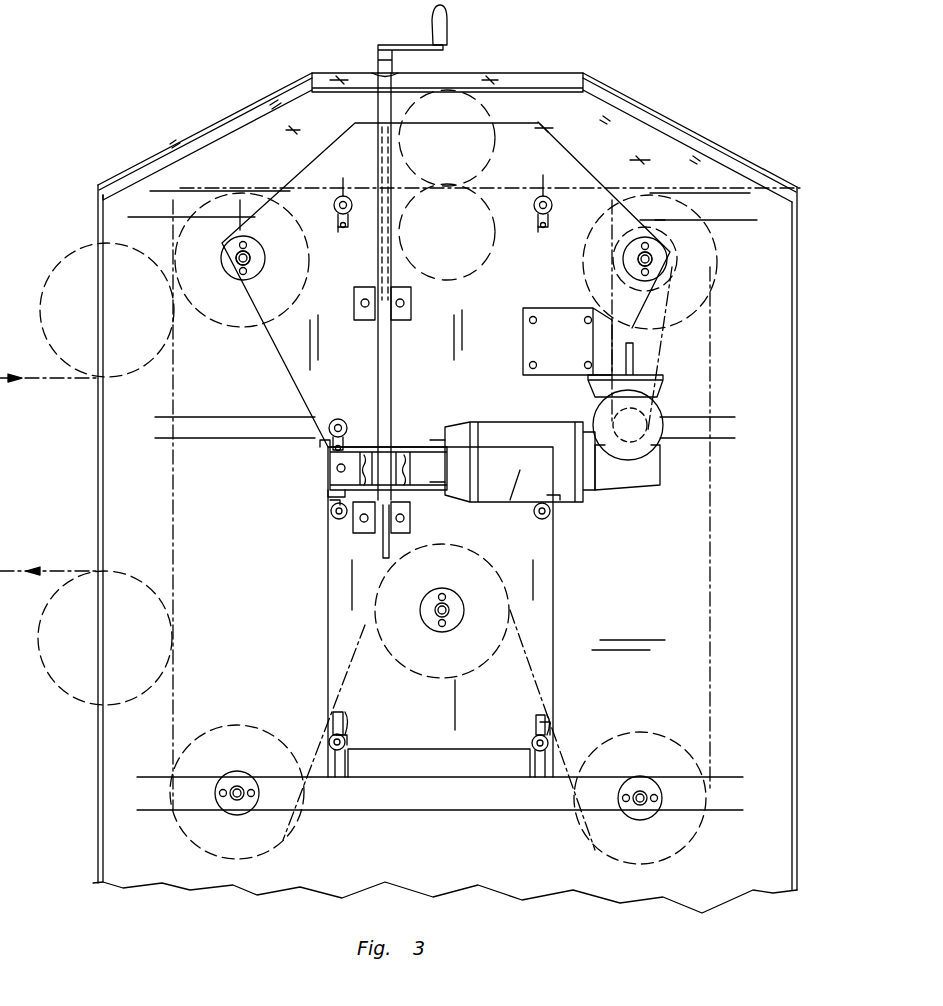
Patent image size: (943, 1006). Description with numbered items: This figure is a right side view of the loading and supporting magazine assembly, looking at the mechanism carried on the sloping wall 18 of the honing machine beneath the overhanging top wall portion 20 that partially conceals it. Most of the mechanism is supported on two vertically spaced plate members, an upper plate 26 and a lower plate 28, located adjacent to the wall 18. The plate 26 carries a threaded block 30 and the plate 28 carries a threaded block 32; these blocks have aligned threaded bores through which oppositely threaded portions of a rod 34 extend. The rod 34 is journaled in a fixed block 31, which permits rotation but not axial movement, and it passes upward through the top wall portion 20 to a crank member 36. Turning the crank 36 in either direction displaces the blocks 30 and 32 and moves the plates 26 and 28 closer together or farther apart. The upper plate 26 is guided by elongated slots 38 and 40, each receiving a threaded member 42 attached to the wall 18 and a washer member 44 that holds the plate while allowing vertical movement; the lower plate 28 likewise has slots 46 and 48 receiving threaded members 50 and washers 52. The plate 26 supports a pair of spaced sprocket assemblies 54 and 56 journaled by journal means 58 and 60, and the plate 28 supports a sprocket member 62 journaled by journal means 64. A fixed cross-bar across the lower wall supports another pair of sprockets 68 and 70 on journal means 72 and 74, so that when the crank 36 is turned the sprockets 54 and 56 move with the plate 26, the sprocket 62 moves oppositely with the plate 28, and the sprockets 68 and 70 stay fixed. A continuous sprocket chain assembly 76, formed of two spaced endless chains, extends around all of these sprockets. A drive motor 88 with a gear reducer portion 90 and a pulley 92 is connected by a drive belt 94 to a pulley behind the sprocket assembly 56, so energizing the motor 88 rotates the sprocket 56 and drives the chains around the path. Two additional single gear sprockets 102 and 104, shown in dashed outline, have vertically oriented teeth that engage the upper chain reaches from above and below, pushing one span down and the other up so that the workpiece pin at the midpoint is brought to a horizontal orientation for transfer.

The sloping wall 18 is at (130, 440).
The overhanging top wall portion 20 is at (505, 73).
The upper plate member 26 is at (292, 372).
The lower plate member 28 is at (327, 605).
The threaded block 30 is at (411, 303).
The fixed block 31 is at (330, 466).
The threaded block 32 is at (410, 525).
The rod 34 is at (392, 378).
The crank member 36 is at (398, 45).
The elongated slot 38 is at (347, 235).
The elongated slot 40 is at (330, 452).
The threaded member 42 is at (442, 173).
The washer member 44 is at (333, 207).
The slot 46 is at (330, 494).
The slot 48 is at (345, 712).
The threaded member 50 is at (330, 505).
The washer 52 is at (331, 515).
The sprocket assembly 54 is at (200, 243).
The sprocket assembly 56 is at (700, 240).
The journal means 58 is at (255, 258).
The journal means 60 is at (654, 258).
The sprocket member 62 is at (435, 648).
The journal means 64 is at (452, 603).
The sprocket 68 is at (230, 750).
The sprocket 70 is at (675, 762).
The journal means 72 is at (238, 798).
The journal means 74 is at (635, 802).
The sprocket chain assembly 76 is at (172, 540).
The drive motor 88 is at (520, 470).
The gear reducer portion 90 is at (657, 415).
The pulley 92 is at (660, 460).
The drive belt 94 is at (670, 335).
The single gear sprocket 102 is at (475, 115).
The single gear sprocket 104 is at (455, 237).